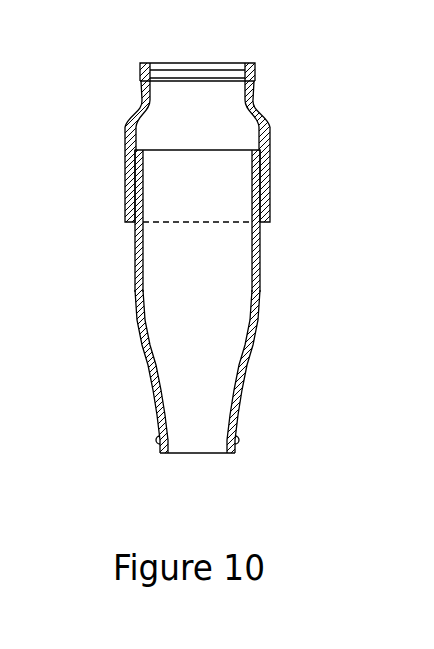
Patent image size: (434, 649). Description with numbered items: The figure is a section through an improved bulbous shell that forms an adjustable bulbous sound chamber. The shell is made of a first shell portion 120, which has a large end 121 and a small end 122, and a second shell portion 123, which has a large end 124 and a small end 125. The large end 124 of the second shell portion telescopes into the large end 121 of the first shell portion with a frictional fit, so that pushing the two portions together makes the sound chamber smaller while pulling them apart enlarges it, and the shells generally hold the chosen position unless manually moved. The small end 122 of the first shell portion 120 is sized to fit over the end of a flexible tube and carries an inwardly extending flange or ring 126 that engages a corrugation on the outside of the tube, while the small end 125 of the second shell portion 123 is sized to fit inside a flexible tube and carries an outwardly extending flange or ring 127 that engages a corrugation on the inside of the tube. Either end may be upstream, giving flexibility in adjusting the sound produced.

The first shell portion 120 is at (130, 120).
The large end of first shell portion 121 is at (127, 195).
The small end of first shell portion 122 is at (142, 70).
The second shell portion 123 is at (145, 352).
The large end of second shell portion 124 is at (130, 248).
The small end of second shell portion 125 is at (163, 453).
The inwardly extending flange or ring 126 is at (223, 77).
The outwardly extending flange or ring 127 is at (157, 440).